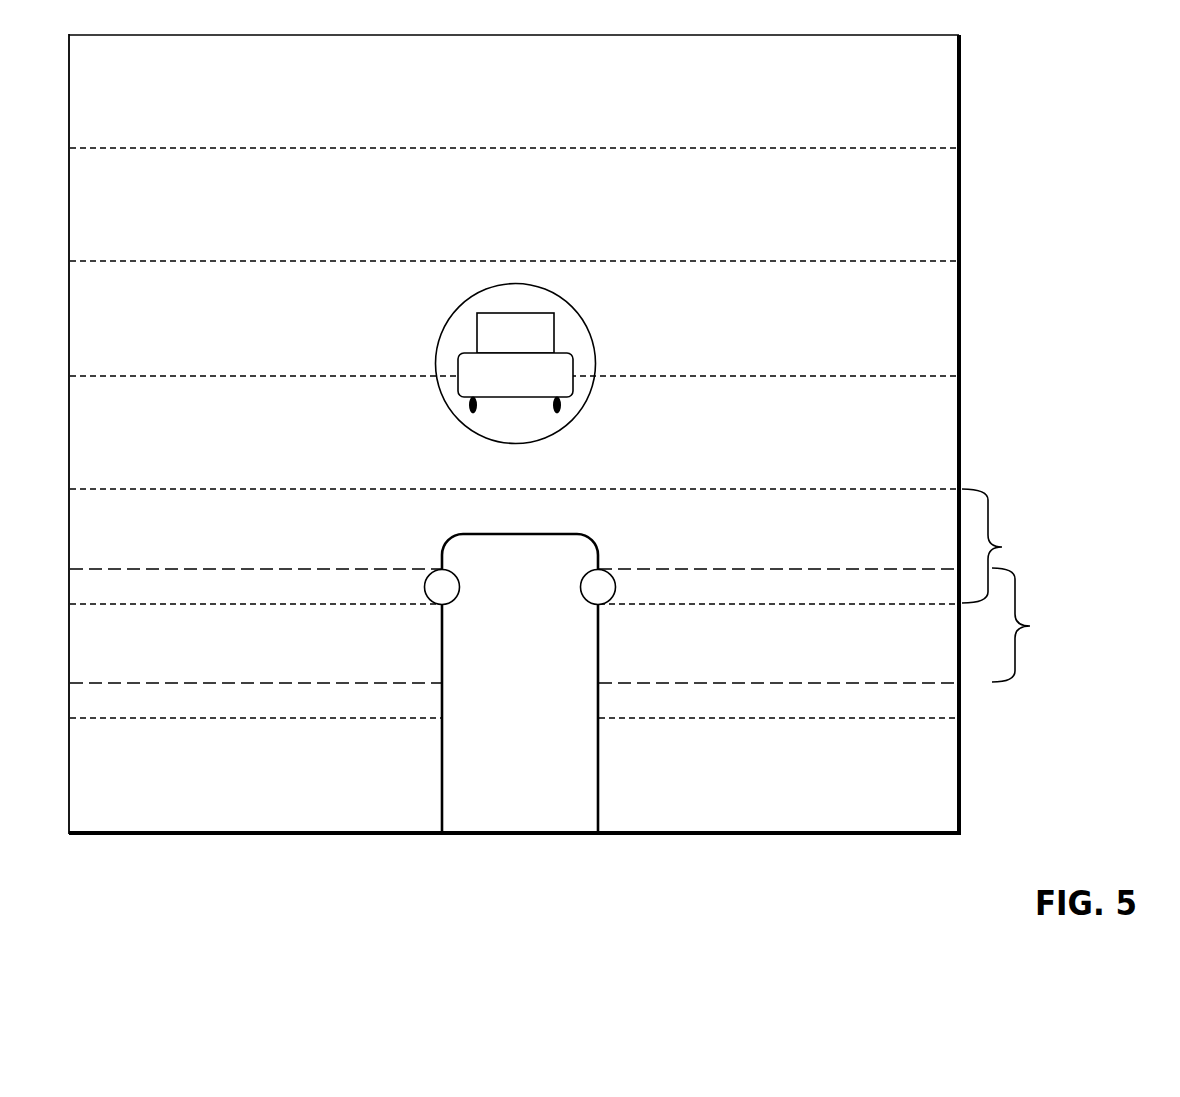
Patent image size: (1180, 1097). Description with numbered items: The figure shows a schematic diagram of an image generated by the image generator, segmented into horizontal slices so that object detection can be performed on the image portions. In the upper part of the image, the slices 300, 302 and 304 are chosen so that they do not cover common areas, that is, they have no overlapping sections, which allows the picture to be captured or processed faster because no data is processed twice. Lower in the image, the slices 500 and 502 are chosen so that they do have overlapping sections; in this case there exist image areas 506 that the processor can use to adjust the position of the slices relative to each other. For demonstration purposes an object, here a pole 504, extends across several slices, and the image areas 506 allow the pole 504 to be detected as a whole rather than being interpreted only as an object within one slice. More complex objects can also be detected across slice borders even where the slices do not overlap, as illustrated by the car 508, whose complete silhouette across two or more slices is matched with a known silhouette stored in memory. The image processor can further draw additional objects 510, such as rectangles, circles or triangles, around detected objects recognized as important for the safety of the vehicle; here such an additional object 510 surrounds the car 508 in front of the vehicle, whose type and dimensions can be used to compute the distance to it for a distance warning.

The slice 300 is at (960, 137).
The slice 302 is at (960, 249).
The slice 304 is at (960, 363).
The slice 500 is at (989, 533).
The slice 502 is at (1017, 617).
The pole 504 is at (598, 806).
The image areas 506 is at (416, 587).
The car 508 is at (582, 390).
The additional objects 510 is at (597, 349).